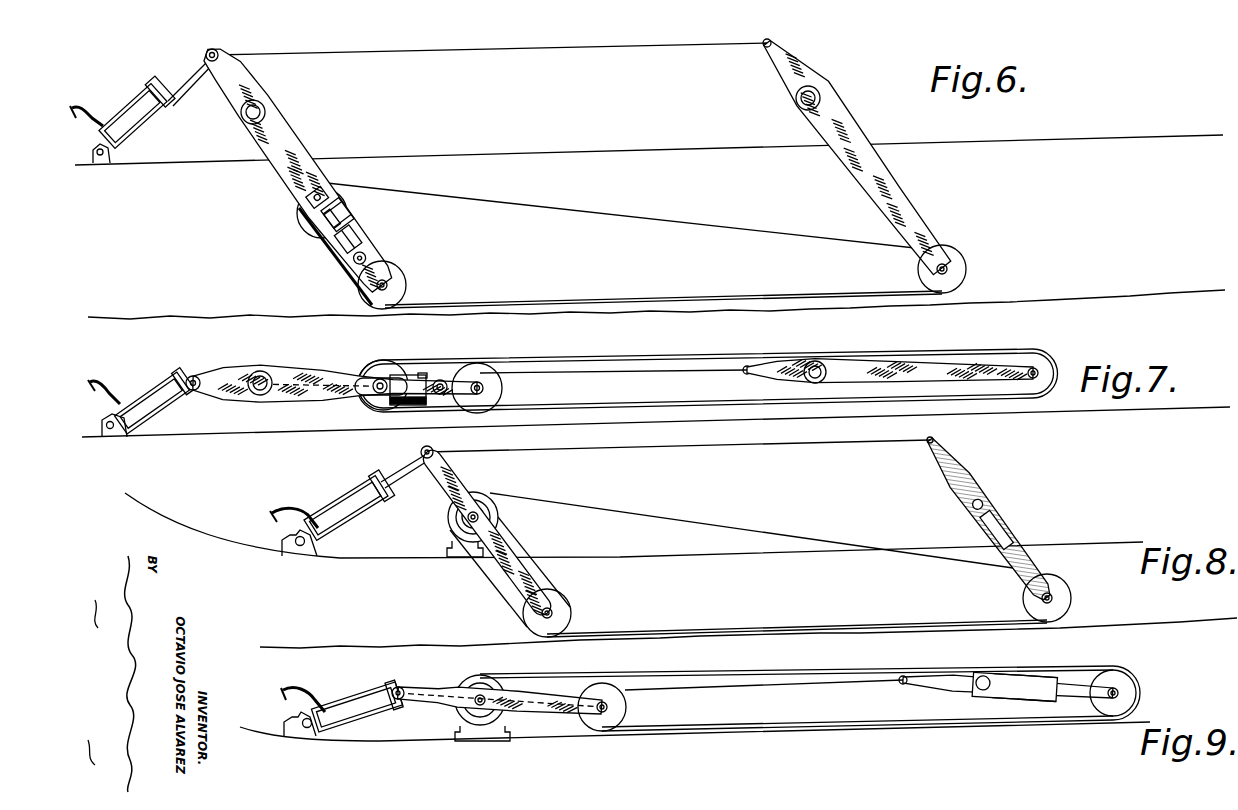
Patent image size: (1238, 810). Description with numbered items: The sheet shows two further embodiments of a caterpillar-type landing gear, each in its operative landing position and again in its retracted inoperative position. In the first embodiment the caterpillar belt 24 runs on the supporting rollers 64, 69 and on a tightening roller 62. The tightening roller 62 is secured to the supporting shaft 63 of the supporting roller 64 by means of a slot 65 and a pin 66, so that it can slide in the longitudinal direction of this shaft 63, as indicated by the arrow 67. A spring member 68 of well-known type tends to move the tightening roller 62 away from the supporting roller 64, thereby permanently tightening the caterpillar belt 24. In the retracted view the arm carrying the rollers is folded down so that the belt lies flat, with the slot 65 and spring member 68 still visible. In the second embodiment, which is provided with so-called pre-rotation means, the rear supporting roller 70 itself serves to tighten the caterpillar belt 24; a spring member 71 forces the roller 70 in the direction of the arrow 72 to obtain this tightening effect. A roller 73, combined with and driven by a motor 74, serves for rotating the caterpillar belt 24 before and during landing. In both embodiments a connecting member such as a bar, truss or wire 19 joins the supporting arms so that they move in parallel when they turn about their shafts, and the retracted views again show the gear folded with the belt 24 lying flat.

In FIG. 8, the connecting bar 19 is at (672, 448).
In FIG. 9, the connecting bar 19 is at (745, 685).
In FIG. 6, the caterpillar belt 24 is at (582, 205).
In FIG. 8, the caterpillar belt 24 is at (768, 532).
In FIG. 9, the caterpillar belt 24 is at (783, 668).
In FIG. 6, the tightening roller 62 is at (308, 220).
In FIG. 6, the supporting shaft 63 is at (287, 173).
In FIG. 6, the supporting roller 64 is at (398, 285).
In FIG. 6, the slot 65 is at (313, 195).
In FIG. 7, the slot 65 is at (365, 378).
In FIG. 6, the pin 66 is at (345, 205).
In FIG. 6, the arrow 67 is at (368, 223).
In FIG. 6, the spring member 68 is at (327, 251).
In FIG. 7, the spring member 68 is at (422, 373).
In FIG. 6, the supporting roller 69 is at (958, 264).
In FIG. 8, the rear supporting roller 70 is at (1062, 596).
In FIG. 8, the spring member 71 is at (1000, 507).
In FIG. 8, the arrow 72 is at (1037, 550).
In FIG. 8, the roller 73 is at (481, 496).
In FIG. 8, the motor 74 is at (465, 522).